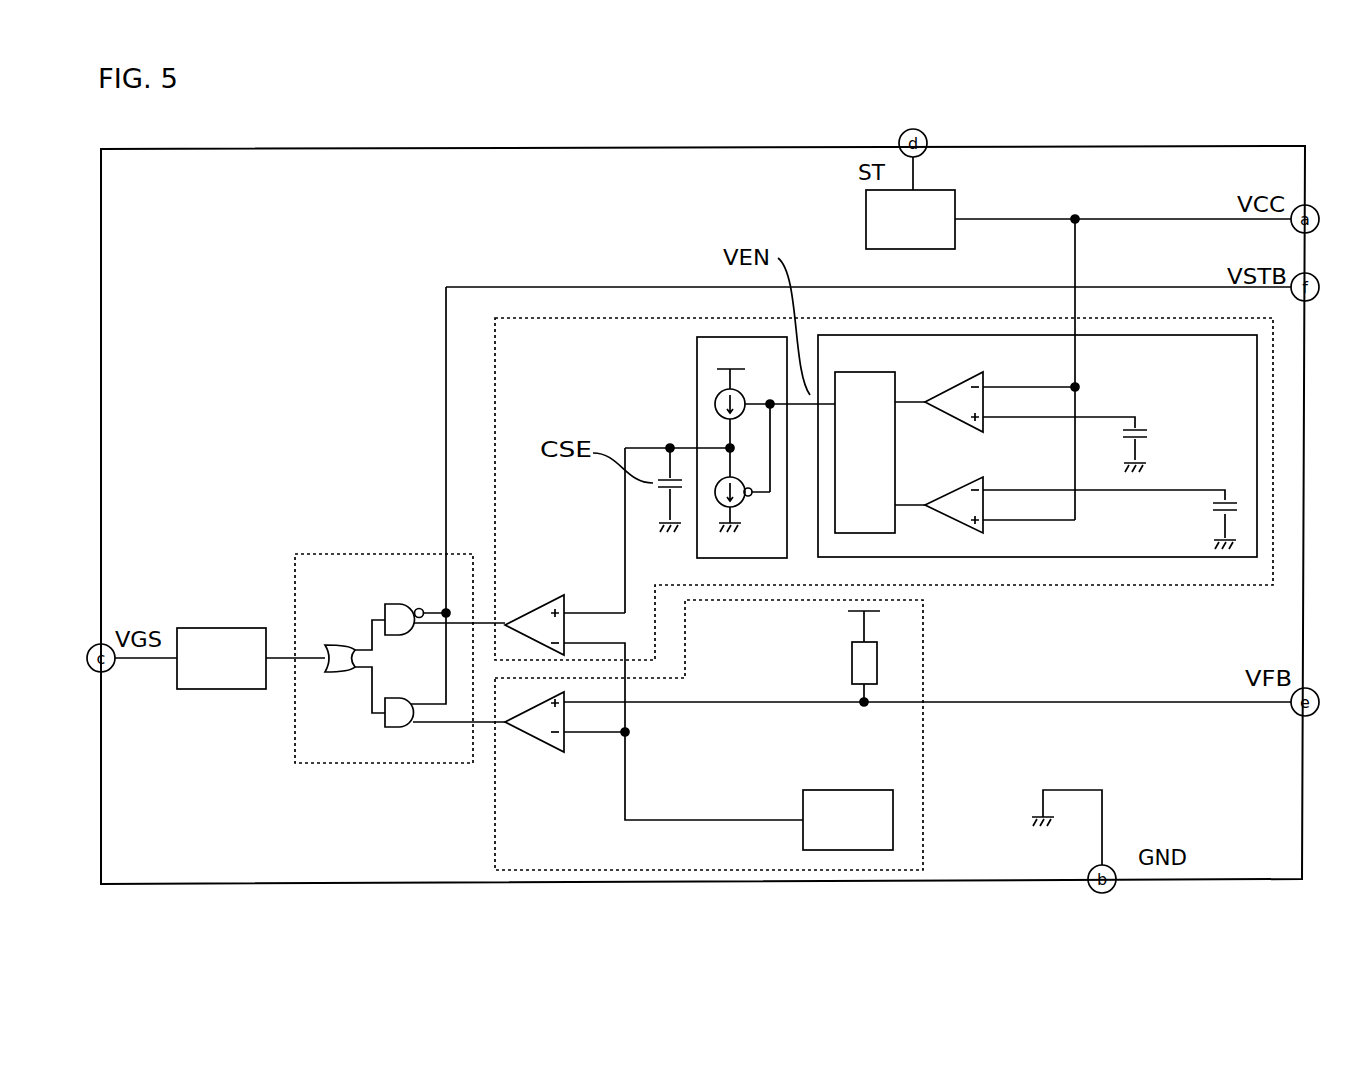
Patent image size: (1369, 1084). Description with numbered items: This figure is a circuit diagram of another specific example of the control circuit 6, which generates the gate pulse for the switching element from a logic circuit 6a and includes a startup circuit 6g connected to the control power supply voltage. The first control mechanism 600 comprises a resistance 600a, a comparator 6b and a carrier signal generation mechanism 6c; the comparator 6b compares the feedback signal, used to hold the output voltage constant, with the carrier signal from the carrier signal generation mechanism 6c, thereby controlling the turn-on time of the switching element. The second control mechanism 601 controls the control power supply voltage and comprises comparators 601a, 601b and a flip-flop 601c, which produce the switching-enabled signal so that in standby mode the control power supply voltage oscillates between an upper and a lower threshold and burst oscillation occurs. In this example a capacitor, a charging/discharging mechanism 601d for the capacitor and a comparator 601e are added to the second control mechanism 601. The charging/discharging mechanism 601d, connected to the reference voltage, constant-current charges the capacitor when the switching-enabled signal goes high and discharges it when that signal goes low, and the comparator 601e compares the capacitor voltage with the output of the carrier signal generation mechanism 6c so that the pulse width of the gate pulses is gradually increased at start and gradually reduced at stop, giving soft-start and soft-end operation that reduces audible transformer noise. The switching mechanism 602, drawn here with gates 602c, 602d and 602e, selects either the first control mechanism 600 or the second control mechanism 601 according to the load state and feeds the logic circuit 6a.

The control circuit 6 is at (268, 890).
The logic circuit 6a is at (235, 620).
The comparator 6b is at (518, 738).
The carrier signal generation mechanism 6c is at (835, 780).
The startup circuit 6g is at (850, 228).
The first control mechanism 600 is at (925, 752).
The resistance 600a is at (850, 668).
The second control mechanism 601 is at (1110, 585).
The comparator 601a is at (955, 378).
The comparator 601b is at (955, 487).
The flip-flop 601c is at (881, 538).
The charging/discharging mechanism 601d is at (685, 395).
The comparator 601e is at (550, 588).
The switching mechanism 602 is at (360, 545).
The OR gate 602c is at (355, 637).
The AND gate 602d is at (397, 740).
The NAND gate 602e is at (415, 590).